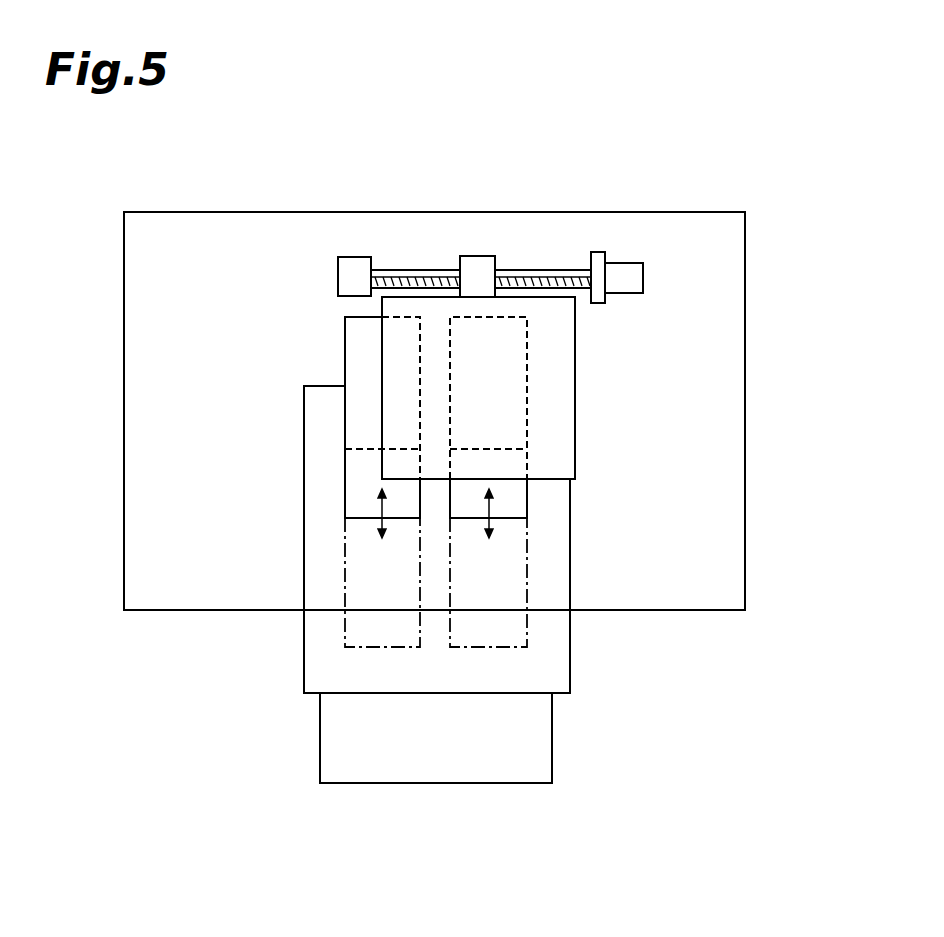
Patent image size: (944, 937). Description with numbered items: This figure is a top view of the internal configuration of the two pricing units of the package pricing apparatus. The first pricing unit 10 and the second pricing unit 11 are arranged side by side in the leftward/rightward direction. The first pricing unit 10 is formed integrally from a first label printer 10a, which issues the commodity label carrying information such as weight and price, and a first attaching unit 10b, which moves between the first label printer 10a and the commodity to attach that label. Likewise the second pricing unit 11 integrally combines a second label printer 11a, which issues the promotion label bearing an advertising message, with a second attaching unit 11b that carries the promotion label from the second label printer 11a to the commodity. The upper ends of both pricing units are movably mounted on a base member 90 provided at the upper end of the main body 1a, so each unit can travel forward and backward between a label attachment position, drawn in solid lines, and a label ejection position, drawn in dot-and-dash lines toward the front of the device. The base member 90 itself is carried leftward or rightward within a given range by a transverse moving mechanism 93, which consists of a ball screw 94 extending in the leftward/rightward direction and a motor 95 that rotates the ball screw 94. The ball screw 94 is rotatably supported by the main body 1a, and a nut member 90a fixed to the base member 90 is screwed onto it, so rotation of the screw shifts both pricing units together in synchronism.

The main body 1a is at (746, 227).
The first pricing unit 10 is at (660, 387).
The first label printer 10a is at (498, 402).
The first attaching unit 10b is at (511, 504).
The second pricing unit 11 is at (216, 330).
The second label printer 11a is at (358, 350).
The second attaching unit 11b is at (360, 487).
The base member 90 is at (558, 354).
The nut member 90a is at (478, 275).
The transverse moving mechanism 93 is at (560, 235).
The ball screw 94 is at (402, 273).
The motor 95 is at (630, 273).